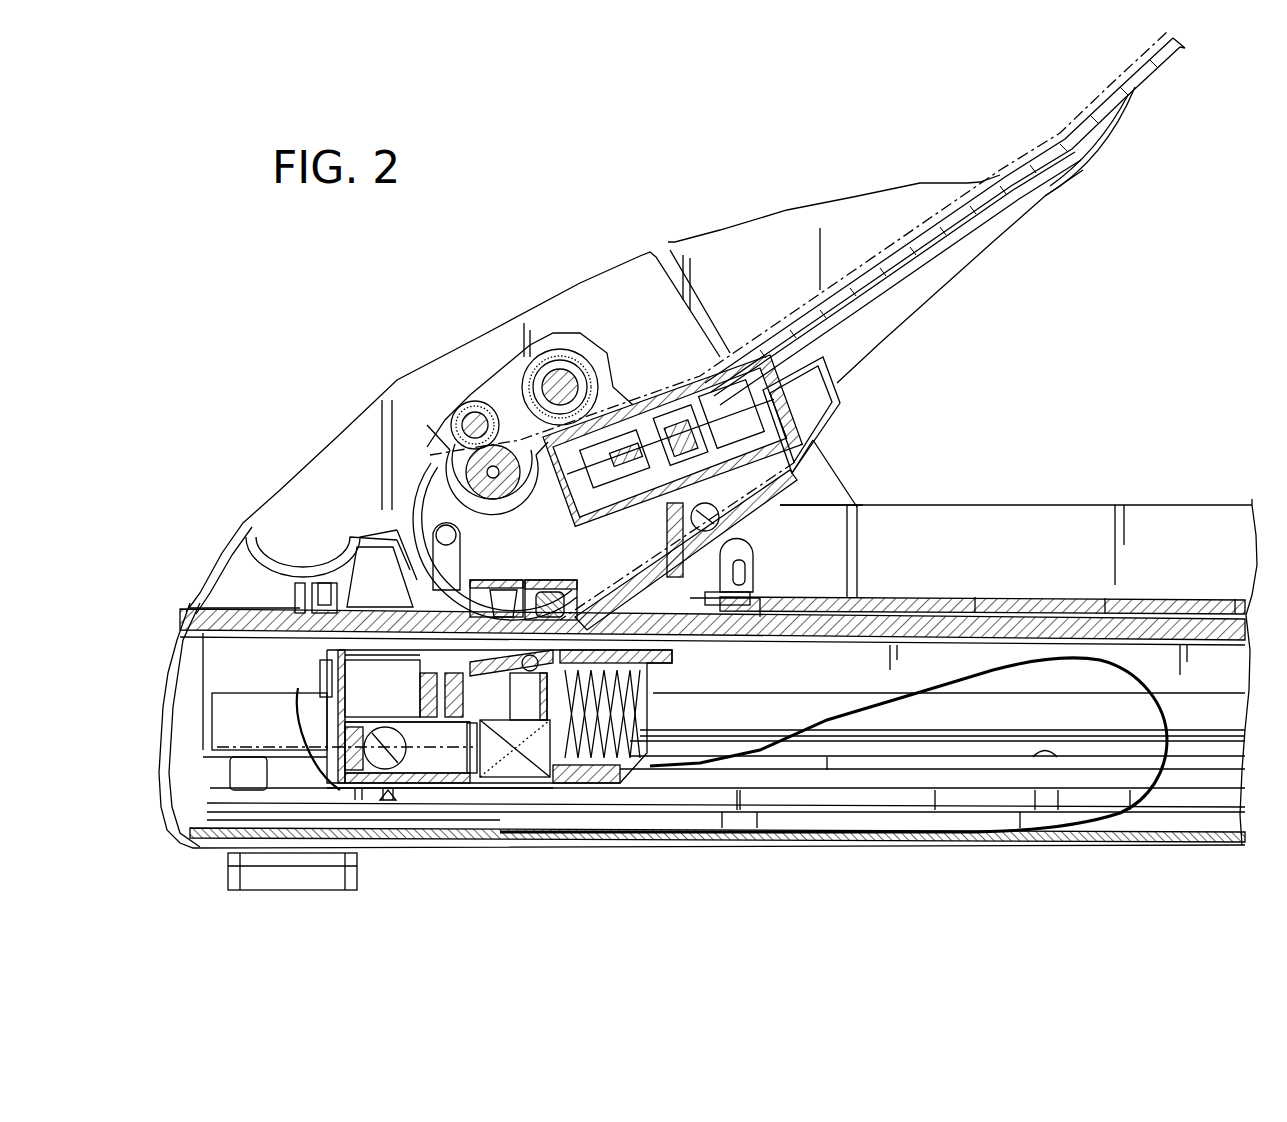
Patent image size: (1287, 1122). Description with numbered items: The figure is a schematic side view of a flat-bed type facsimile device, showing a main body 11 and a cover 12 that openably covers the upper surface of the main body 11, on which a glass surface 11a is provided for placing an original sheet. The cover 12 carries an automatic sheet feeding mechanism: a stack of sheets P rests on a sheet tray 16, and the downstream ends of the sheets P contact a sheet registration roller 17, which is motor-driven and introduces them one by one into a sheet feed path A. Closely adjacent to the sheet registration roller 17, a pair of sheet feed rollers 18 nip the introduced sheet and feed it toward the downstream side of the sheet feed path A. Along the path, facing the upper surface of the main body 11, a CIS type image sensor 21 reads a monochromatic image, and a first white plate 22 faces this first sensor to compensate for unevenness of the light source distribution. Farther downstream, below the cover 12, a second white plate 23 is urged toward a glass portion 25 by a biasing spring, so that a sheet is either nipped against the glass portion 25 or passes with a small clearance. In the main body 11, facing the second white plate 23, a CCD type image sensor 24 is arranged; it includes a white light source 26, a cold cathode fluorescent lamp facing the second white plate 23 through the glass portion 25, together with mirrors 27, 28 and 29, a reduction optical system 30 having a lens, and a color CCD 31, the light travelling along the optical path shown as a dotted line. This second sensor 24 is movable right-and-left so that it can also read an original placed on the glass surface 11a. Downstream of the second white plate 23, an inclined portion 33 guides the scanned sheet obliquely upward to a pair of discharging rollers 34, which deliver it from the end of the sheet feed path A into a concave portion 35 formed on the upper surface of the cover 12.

The main body 11 is at (158, 685).
The glass surface 11a is at (815, 640).
The cover 12 is at (212, 517).
The sheet tray 16 is at (1030, 122).
The sheet registration roller 17 is at (533, 430).
The sheet feed rollers 18 is at (498, 405).
The CIS type image sensor 21 is at (542, 580).
The first white plate 22 is at (490, 580).
The second white plate 23 is at (580, 595).
The CCD type image sensor 24 is at (533, 800).
The glass portion 25 is at (483, 687).
The white light source 26 is at (515, 748).
The mirror 27 is at (593, 787).
The mirror 28 is at (660, 740).
The mirror 29 is at (660, 660).
The reduction optical system 30 is at (510, 785).
The CCD 31 is at (388, 805).
The inclined portion 33 is at (697, 628).
The discharging rollers 34 is at (760, 555).
The concave portion 35 is at (1060, 540).
The sheet feed path A is at (445, 470).
The sheet P is at (890, 248).